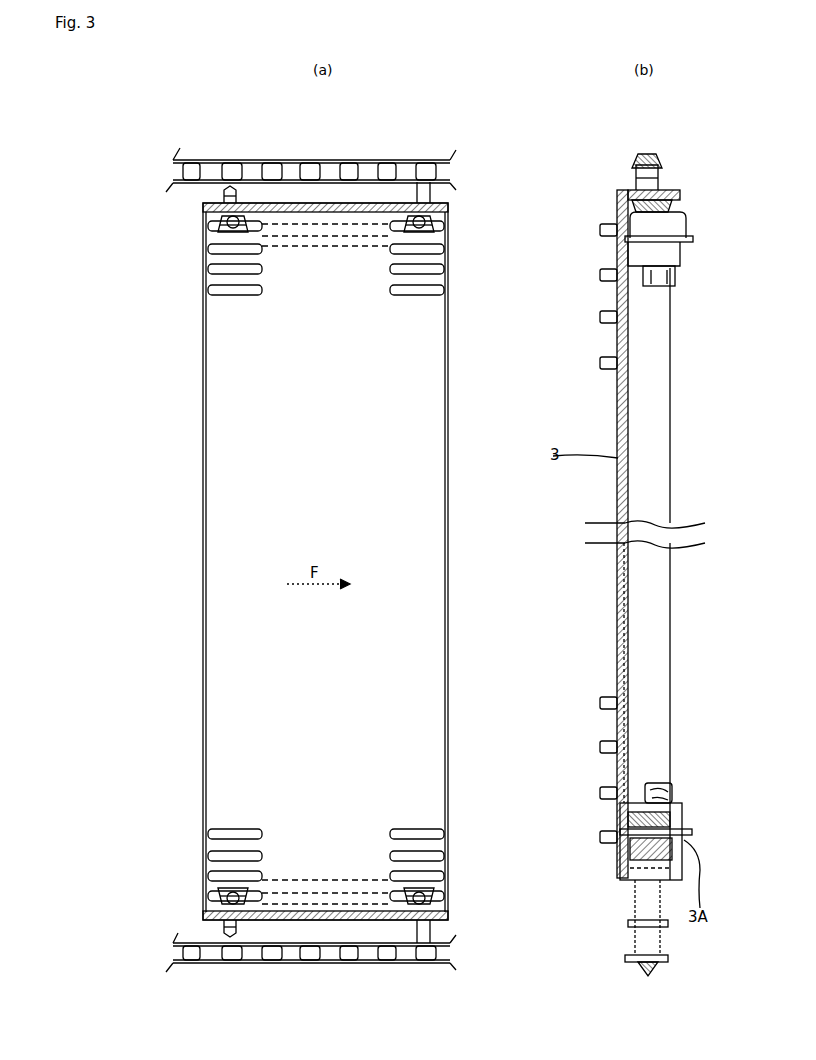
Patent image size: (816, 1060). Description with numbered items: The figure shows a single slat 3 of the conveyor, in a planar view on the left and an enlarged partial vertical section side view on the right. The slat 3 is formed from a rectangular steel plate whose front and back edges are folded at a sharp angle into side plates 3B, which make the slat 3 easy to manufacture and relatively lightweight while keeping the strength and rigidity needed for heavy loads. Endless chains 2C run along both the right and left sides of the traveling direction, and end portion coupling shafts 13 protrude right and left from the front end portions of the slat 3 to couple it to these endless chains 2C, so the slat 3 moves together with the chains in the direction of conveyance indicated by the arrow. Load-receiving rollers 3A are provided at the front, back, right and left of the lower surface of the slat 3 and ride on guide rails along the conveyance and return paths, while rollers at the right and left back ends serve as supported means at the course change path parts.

The slat 3 is at (232, 466).
The load-receiving roller 3A is at (205, 222).
The side plate 3B is at (660, 391).
The end portion coupling shaft 13 is at (432, 194).
The endless chain 2C is at (300, 160).